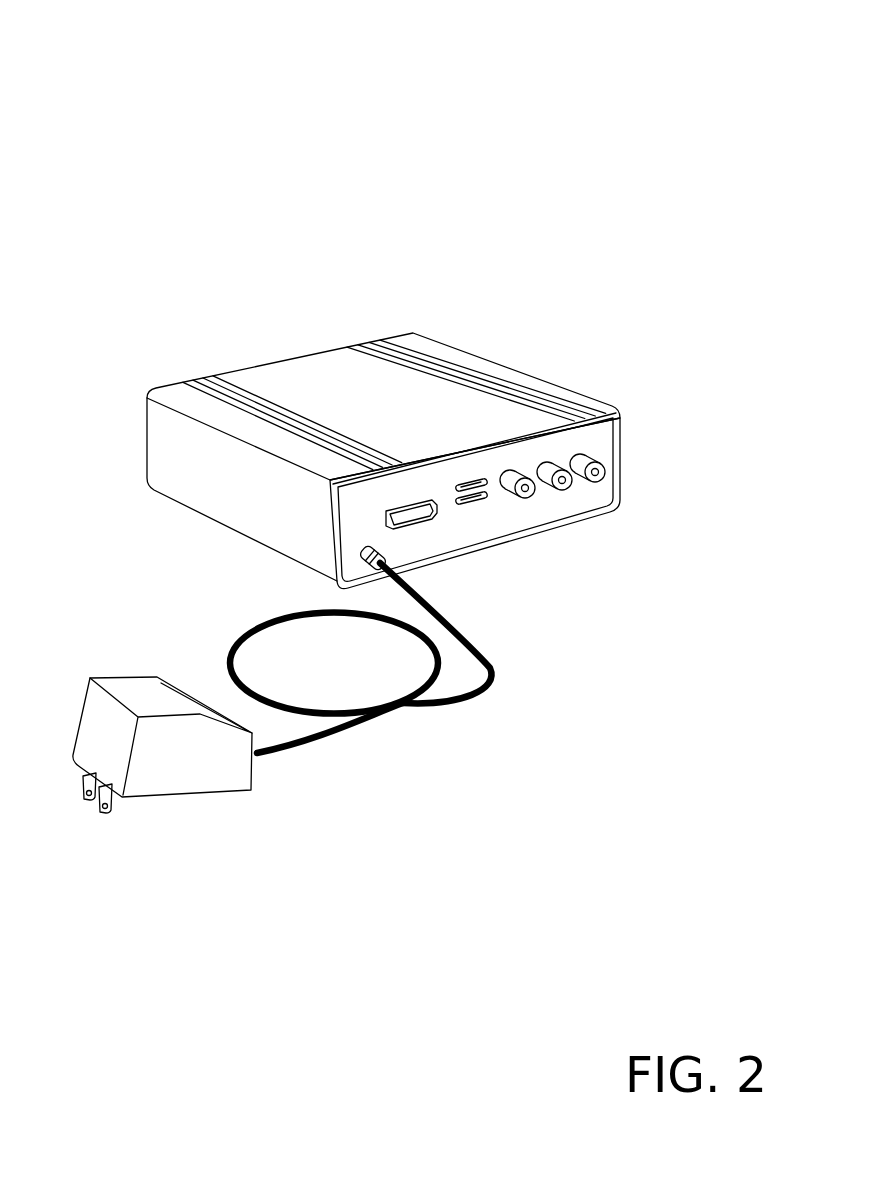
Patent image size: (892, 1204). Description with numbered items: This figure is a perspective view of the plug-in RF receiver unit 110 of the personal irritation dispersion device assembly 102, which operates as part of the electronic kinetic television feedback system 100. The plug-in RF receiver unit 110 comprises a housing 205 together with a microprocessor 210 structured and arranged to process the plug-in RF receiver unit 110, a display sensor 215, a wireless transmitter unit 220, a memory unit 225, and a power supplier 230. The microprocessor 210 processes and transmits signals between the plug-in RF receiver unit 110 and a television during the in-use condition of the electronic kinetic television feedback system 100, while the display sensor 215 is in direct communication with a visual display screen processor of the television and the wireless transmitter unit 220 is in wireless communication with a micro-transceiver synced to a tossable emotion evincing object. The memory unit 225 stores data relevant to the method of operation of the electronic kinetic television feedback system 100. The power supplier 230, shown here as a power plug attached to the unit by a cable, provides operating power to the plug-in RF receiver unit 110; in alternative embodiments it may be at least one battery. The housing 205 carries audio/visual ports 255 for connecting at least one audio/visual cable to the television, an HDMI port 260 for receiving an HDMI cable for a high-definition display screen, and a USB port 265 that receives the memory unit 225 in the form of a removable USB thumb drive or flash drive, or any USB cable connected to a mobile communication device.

The electronic kinetic television feedback system 100 is at (563, 92).
The personal irritation dispersion device assembly 102 is at (601, 121).
The plug-in RF receiver unit 110 is at (415, 331).
The housing 205 is at (253, 495).
The microprocessor 210 is at (325, 413).
The display sensor 215 is at (342, 394).
The wireless transmitter unit 220 is at (362, 375).
The memory unit 225 is at (382, 355).
The power supplier 230 is at (161, 676).
The audio/visual port 255 is at (600, 489).
The HDMI port 260 is at (422, 532).
The USB port 265 is at (484, 512).